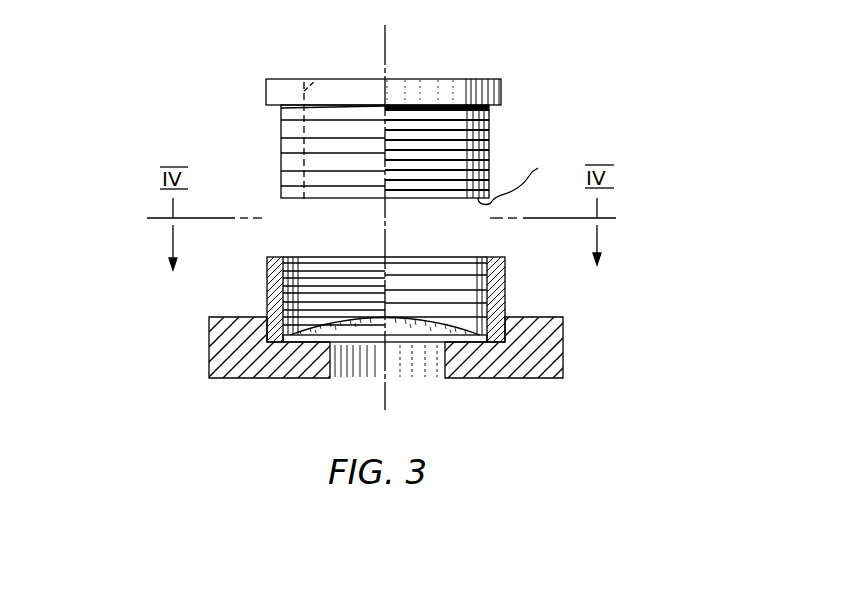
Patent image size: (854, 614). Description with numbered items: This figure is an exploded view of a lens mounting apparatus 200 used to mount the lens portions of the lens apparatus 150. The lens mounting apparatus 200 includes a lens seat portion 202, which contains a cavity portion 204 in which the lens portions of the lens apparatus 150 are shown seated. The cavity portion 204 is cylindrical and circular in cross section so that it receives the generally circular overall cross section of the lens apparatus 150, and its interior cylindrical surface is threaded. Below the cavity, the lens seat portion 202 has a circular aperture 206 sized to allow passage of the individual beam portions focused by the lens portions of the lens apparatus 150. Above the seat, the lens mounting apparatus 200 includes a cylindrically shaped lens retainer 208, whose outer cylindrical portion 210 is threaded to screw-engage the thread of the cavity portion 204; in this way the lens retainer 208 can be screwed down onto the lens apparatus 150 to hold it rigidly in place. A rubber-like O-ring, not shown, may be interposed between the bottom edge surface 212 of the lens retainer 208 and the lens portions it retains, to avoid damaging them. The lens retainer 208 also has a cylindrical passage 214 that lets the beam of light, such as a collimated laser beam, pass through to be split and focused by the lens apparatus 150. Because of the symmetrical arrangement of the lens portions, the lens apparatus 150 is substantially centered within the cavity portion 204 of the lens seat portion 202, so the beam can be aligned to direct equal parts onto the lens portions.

The lens mounting apparatus 200 is at (645, 153).
The lens seat portion 202 is at (565, 352).
The cavity portion 204 is at (490, 252).
The circular aperture 206 is at (445, 360).
The lens retainer 208 is at (502, 87).
The outer cylindrical portion 210 is at (489, 125).
The bottom edge surface 212 is at (523, 175).
The cylindrical passage 214 is at (322, 78).
The lens apparatus 150 is at (417, 345).